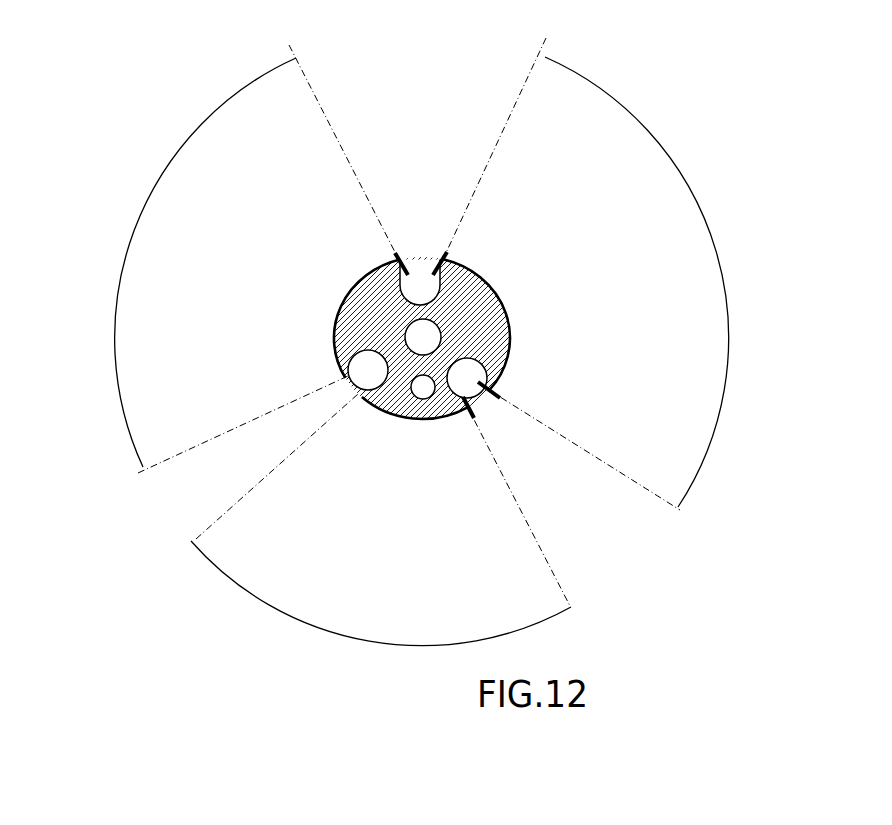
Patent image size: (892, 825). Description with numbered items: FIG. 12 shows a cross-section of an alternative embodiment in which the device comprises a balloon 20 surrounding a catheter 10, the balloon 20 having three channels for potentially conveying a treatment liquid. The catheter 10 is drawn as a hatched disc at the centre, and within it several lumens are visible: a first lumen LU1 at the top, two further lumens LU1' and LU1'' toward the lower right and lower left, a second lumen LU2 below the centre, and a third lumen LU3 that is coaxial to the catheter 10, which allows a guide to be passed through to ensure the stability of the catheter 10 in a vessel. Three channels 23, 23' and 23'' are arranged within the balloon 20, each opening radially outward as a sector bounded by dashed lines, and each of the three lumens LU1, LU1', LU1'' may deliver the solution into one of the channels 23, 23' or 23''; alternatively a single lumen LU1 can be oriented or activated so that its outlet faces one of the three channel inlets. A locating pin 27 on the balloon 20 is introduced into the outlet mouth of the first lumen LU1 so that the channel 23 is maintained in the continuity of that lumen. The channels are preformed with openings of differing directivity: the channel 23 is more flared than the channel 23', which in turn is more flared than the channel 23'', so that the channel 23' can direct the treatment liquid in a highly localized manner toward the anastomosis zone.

The catheter 10 is at (335, 346).
The balloon 20 is at (711, 404).
The channel 23 is at (417, 145).
The channel 23' is at (588, 516).
The channel 23'' is at (225, 475).
The locating pin 27 is at (443, 252).
The first lumen LU1 is at (379, 278).
The first lumen (second instance) LU1' is at (519, 370).
The first lumen (third instance) LU1'' is at (371, 411).
The second lumen LU2 is at (460, 410).
The third lumen LU3 is at (428, 332).